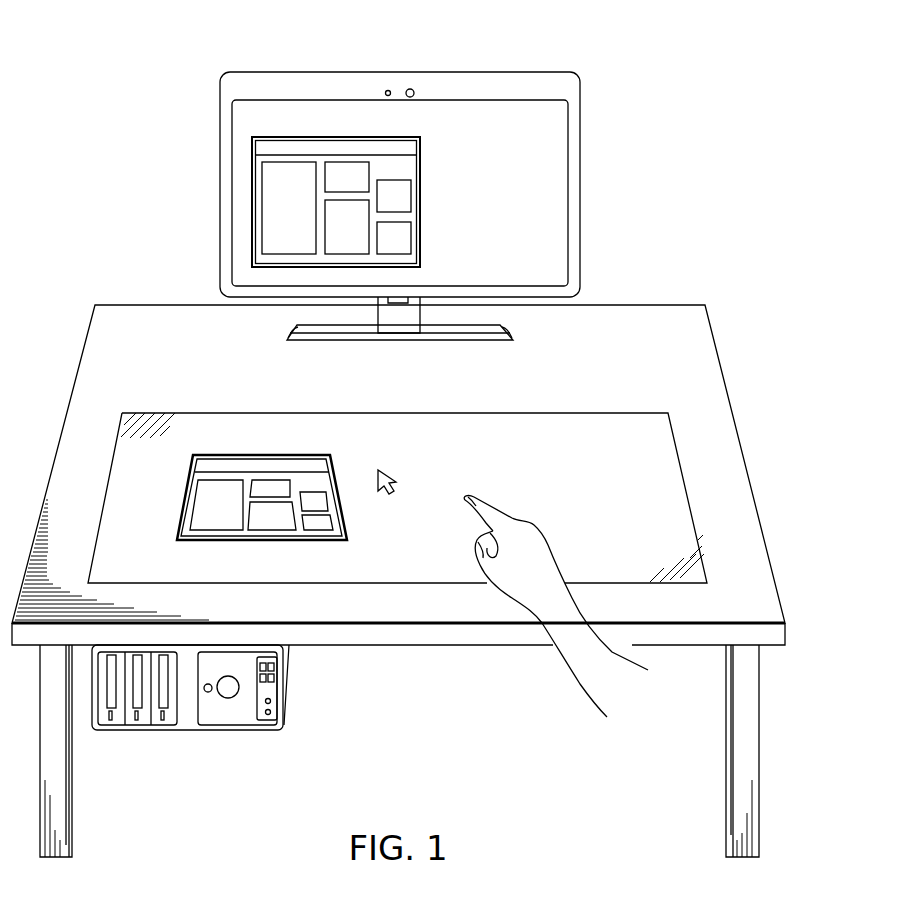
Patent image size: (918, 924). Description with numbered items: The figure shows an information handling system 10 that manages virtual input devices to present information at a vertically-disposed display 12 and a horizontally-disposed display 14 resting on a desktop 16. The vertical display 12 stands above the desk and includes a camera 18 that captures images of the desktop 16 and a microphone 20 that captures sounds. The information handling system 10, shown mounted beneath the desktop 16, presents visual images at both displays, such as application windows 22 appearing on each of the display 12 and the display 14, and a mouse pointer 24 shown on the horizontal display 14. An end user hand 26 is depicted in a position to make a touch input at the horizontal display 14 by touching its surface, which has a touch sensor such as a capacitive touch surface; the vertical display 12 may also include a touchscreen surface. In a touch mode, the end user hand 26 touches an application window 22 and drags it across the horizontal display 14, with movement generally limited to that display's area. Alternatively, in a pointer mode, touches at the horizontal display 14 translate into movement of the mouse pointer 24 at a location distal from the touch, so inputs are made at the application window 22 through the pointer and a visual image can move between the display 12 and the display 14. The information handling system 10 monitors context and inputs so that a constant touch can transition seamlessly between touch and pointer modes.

The information handling system 10 is at (188, 730).
The vertically-disposed display 12 is at (556, 178).
The horizontally-disposed display 14 is at (633, 423).
The desktop 16 is at (728, 478).
The camera 18 is at (413, 93).
The microphone 20 is at (385, 93).
The application window 22 is at (213, 455).
The mouse pointer 24 is at (393, 463).
The end user hand 26 is at (527, 523).